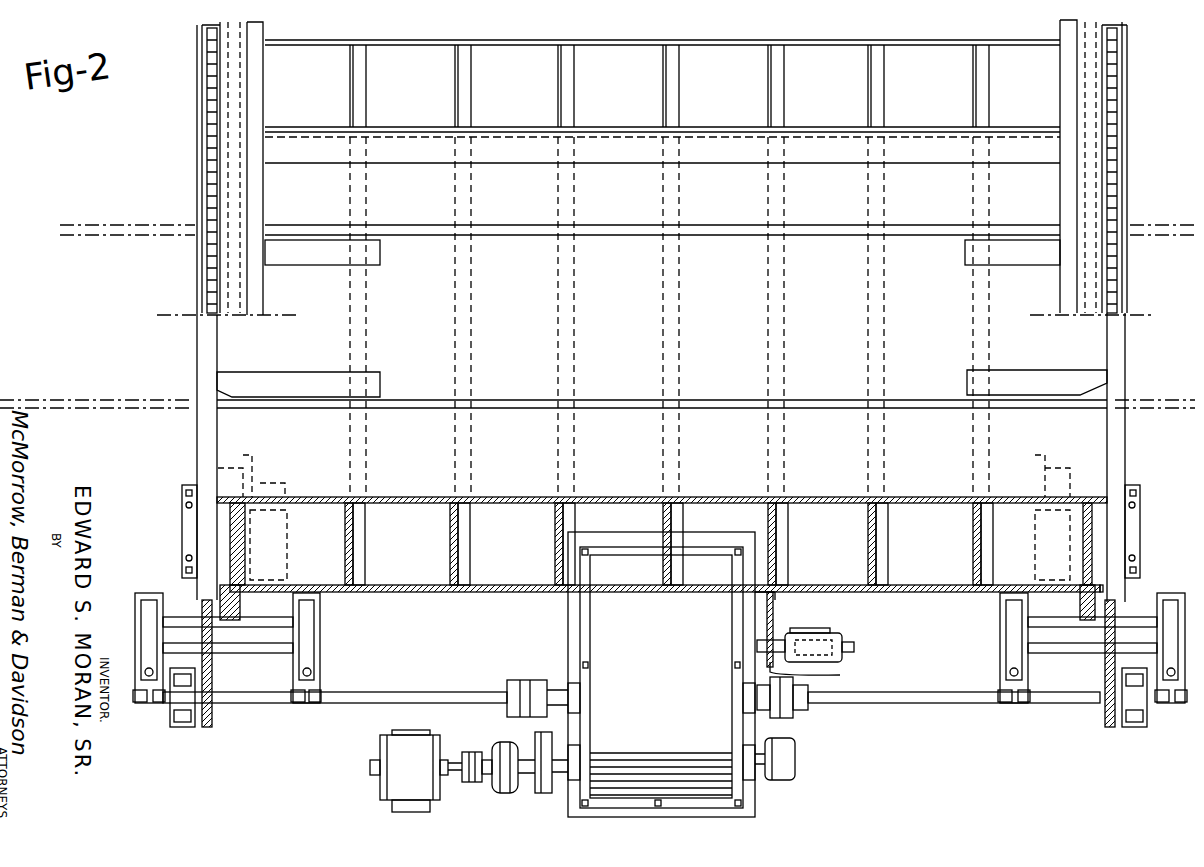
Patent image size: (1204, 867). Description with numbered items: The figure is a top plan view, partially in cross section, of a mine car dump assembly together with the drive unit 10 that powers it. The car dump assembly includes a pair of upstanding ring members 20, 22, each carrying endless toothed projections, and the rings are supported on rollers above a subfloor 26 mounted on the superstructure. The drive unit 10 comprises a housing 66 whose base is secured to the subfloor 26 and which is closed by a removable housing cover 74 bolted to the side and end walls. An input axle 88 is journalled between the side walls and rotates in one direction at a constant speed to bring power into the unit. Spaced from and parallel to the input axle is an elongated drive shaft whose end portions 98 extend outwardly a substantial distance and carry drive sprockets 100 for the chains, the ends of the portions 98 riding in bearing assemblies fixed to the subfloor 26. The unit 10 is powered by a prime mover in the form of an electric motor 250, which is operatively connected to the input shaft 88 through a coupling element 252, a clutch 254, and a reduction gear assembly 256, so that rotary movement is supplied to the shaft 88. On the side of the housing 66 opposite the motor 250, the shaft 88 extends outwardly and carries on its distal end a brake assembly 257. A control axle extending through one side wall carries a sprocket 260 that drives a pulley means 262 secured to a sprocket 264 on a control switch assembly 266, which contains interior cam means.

The drive unit 10 is at (795, 815).
The upstanding ring member 20 is at (197, 135).
The upstanding ring member 22 is at (1128, 134).
The subfloor 26 is at (892, 773).
The housing 66 is at (757, 800).
The housing cover 74 is at (663, 680).
The input axle 88 is at (562, 760).
The end portions of drive shaft 98 is at (948, 697).
The drive sprocket 100 is at (1105, 715).
The electric motor 250 is at (371, 789).
The coupling element 252 is at (460, 752).
The clutch 254 is at (500, 745).
The reduction gear assembly 256 is at (540, 787).
The brake assembly 257 is at (795, 760).
The sprocket 260 is at (775, 597).
The pulley means 262 is at (775, 627).
The sprocket 264 is at (840, 674).
The control switch assembly 266 is at (840, 634).